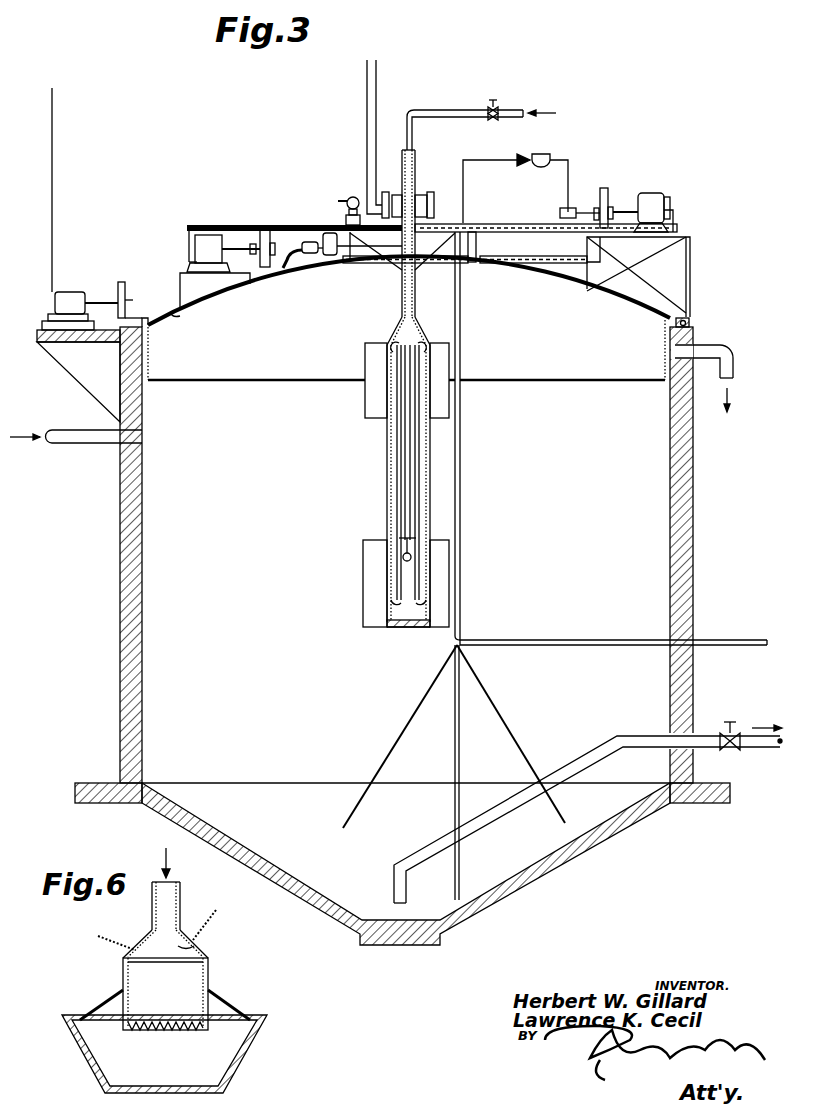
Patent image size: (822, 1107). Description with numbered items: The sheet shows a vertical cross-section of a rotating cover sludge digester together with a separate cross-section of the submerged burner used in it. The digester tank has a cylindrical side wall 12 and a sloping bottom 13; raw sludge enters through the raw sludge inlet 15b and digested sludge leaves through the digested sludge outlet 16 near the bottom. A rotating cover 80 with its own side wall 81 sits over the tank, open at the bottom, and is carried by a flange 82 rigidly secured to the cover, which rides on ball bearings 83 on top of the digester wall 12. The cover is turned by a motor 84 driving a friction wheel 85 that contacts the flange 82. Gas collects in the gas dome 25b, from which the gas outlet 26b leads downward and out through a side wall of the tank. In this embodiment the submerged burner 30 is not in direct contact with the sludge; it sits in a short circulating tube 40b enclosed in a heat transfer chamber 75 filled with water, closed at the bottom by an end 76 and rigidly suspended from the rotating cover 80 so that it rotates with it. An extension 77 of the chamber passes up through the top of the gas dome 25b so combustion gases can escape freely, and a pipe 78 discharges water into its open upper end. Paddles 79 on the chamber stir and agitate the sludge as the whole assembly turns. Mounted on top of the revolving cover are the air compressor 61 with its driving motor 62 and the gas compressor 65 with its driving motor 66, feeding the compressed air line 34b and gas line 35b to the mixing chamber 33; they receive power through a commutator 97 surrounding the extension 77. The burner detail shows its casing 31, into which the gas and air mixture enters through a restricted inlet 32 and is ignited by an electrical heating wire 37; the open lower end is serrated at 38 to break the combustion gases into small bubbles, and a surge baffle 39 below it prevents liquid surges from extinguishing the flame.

In FIG. 3, the side wall 12 is at (402, 560).
In FIG. 3, the sloping bottom 13 is at (548, 862).
In FIG. 3, the raw sludge inlet 15b is at (68, 446).
In FIG. 3, the digested sludge outlet 16 is at (582, 760).
In FIG. 3, the gas dome 25b is at (477, 247).
In FIG. 3, the gas outlet 26b is at (576, 632).
In FIG. 3, the submerged burner 30 is at (411, 557).
In FIG. 6, the submerged burner 30 is at (210, 975).
In FIG. 6, the casing 31 is at (122, 968).
In FIG. 6, the restricted inlet 32 is at (182, 904).
In FIG. 3, the mixing chamber 33 is at (308, 242).
In FIG. 3, the compressed air line 34b is at (284, 268).
In FIG. 3, the gas line 35b is at (320, 258).
In FIG. 6, the electrical heating wire 37 is at (198, 954).
In FIG. 6, the serrated lower end 38 is at (150, 1032).
In FIG. 6, the surge baffle 39 is at (250, 1058).
In FIG. 3, the circulating tube 40b is at (412, 460).
In FIG. 3, the air compressor 61 is at (262, 232).
In FIG. 3, the driving motor 62 is at (208, 236).
In FIG. 3, the gas compressor 65 is at (606, 190).
In FIG. 3, the driving motor 66 is at (652, 196).
In FIG. 3, the heat transfer chamber 75 is at (431, 436).
In FIG. 3, the end 76 is at (404, 630).
In FIG. 3, the extension 77 is at (400, 162).
In FIG. 3, the pipe 78 is at (466, 110).
In FIG. 3, the paddles 79 is at (365, 402).
In FIG. 3, the rotating cover 80 is at (175, 308).
In FIG. 3, the side wall 81 is at (668, 350).
In FIG. 3, the flange 82 is at (690, 316).
In FIG. 3, the ball bearings 83 is at (688, 324).
In FIG. 3, the motor 84 is at (70, 292).
In FIG. 3, the friction wheel 85 is at (126, 284).
In FIG. 3, the commutator 97 is at (430, 194).